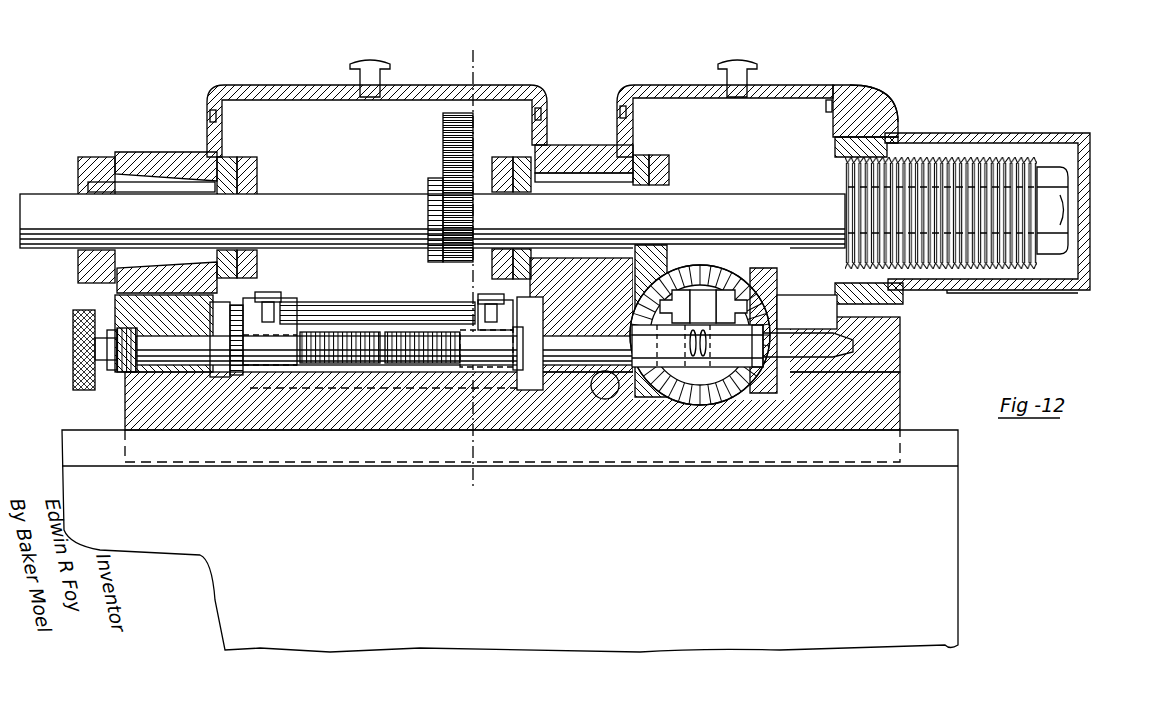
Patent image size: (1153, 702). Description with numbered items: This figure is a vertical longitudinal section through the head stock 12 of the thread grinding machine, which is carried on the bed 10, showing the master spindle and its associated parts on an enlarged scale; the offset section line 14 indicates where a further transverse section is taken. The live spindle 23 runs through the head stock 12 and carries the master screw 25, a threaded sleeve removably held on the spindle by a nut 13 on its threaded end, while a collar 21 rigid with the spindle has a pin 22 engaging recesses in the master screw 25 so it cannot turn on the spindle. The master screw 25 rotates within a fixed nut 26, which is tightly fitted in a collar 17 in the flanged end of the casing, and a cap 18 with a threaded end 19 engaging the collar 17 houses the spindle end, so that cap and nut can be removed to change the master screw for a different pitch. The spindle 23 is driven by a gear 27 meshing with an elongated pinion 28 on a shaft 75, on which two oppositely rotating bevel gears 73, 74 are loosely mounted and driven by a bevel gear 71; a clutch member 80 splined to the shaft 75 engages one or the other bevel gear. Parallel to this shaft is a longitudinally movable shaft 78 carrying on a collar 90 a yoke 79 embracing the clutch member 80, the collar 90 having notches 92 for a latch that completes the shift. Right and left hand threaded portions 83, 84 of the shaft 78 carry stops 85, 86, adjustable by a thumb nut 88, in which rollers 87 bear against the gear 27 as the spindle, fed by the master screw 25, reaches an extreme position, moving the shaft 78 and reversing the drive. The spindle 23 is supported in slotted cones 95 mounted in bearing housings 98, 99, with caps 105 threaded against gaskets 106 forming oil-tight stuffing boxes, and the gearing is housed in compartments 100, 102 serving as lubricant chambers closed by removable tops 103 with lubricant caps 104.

The bed 10 is at (510, 541).
The head stock 12 is at (905, 410).
The nut 13 is at (1052, 187).
The tail stock 14 is at (480, 73).
The collar 17 is at (896, 102).
The cap 18 is at (972, 133).
The threaded end 19 is at (888, 158).
The collar 21 is at (862, 100).
The pin 22 is at (890, 140).
The spindle 23 is at (432, 221).
The master screw 25 is at (985, 292).
The fixed nut 26 is at (905, 300).
The gear 27 is at (443, 131).
The elongated pinion 28 is at (340, 330).
The bevel gear 71 is at (775, 277).
The bevel gear 73 is at (782, 395).
The bevel gear 74 is at (640, 375).
The shaft 75 is at (526, 392).
The longitudinally movable shaft 78 is at (568, 368).
The yoke 79 is at (640, 270).
The clutch member 80 is at (717, 303).
The right hand threaded portion 83 is at (415, 368).
The left hand threaded portion 84 is at (330, 365).
The stop 85 is at (478, 345).
The stop 86 is at (250, 378).
The roller 87 is at (280, 300).
The thumb nut 88 is at (75, 320).
The collar 90 is at (756, 385).
The notch 92 is at (706, 372).
The slotted cone 95 is at (360, 185).
The bearing housing 98 is at (160, 170).
The bearing housing 99 is at (572, 150).
The compartment 100 is at (346, 169).
The compartment 102 is at (730, 131).
The removable top 103 is at (412, 85).
The lubricant cap 104 is at (372, 70).
The cap 105 is at (258, 170).
The gasket 106 is at (232, 165).